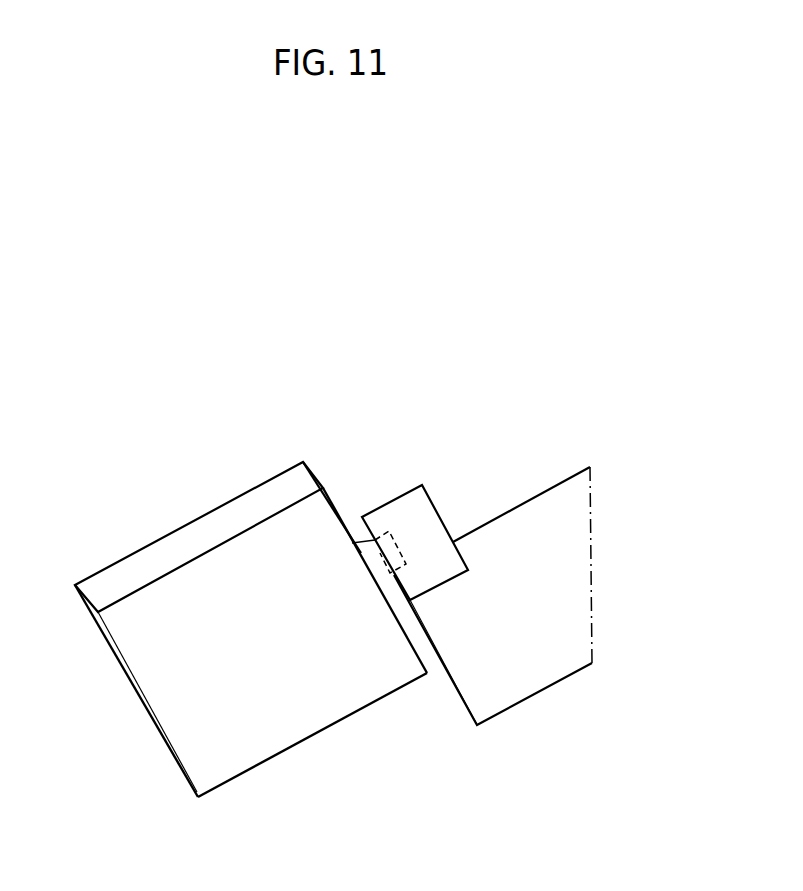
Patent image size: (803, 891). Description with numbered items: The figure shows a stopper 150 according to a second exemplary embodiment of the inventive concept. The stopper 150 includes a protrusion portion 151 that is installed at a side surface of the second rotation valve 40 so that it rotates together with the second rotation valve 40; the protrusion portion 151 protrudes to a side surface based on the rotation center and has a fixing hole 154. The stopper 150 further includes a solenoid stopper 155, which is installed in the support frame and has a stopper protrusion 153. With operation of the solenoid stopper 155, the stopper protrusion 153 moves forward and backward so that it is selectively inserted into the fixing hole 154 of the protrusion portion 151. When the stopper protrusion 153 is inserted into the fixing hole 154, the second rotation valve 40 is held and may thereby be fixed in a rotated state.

The stopper 150 is at (305, 306).
The protrusion portion 151 is at (430, 525).
The stopper protrusion 153 is at (362, 558).
The fixing hole 154 is at (378, 530).
The solenoid stopper 155 is at (227, 770).
The second rotation valve 40 is at (567, 503).